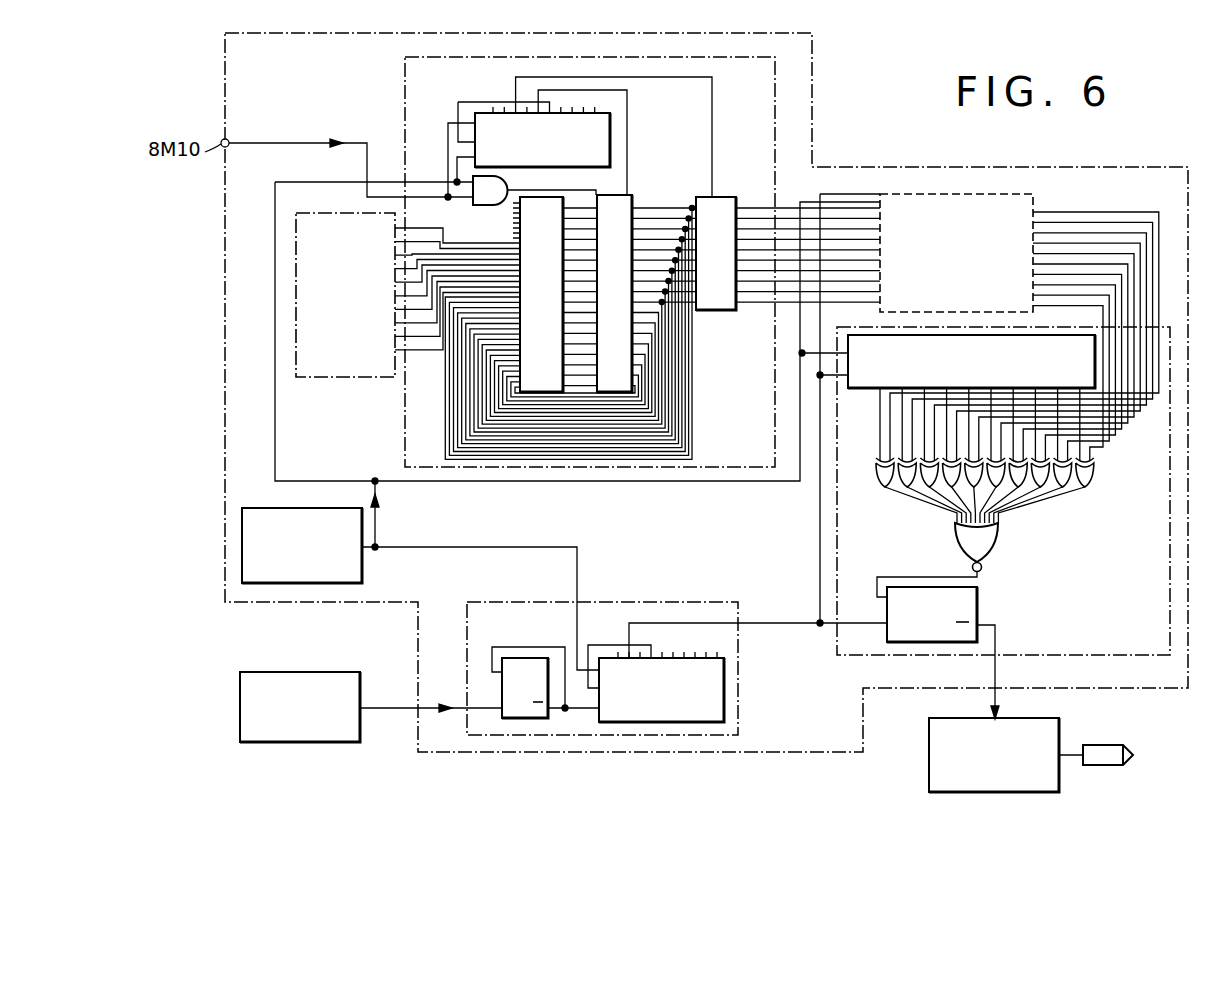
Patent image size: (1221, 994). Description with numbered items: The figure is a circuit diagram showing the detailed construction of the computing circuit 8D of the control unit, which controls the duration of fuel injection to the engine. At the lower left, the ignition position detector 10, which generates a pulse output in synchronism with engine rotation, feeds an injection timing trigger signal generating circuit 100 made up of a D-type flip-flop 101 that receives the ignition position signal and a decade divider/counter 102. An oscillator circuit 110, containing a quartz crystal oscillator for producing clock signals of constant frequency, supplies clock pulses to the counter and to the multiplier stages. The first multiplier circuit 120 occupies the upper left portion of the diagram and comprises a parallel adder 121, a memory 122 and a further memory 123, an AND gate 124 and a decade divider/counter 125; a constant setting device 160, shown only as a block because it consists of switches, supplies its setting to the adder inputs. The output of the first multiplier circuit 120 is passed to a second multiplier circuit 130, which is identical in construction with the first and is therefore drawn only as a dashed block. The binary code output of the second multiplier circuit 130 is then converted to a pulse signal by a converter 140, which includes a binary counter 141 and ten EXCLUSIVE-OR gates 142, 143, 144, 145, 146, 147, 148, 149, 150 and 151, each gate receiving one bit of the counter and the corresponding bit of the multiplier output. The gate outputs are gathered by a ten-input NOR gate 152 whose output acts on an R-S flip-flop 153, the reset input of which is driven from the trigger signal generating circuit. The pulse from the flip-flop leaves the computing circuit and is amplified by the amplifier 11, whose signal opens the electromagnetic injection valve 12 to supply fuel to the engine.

The computing circuit 8D is at (868, 167).
The ignition position detector 10 is at (313, 672).
The amplifier 11 is at (1060, 728).
The electromagnetic injection valve 12 is at (1110, 745).
The injection timing trigger signal generating circuit 100 is at (665, 602).
The D-type flip-flop 101 is at (530, 658).
The decade divider/counter 102 is at (677, 658).
The oscillator circuit 110 is at (300, 508).
The first multiplier circuit 120 is at (775, 95).
The parallel adder 121 is at (567, 200).
The memory 122 is at (632, 203).
The memory 123 is at (714, 197).
The AND gate 124 is at (487, 205).
The decade divider/counter 125 is at (612, 125).
The second multiplier circuit 130 is at (1005, 194).
The converter 140 is at (872, 327).
The binary counter 141 is at (878, 389).
The EXCLUSIVE-OR gate 142 is at (880, 470).
The EXCLUSIVE-OR gate 143 is at (907, 490).
The EXCLUSIVE-OR gate 144 is at (929, 490).
The EXCLUSIVE-OR gate 145 is at (951, 490).
The EXCLUSIVE-OR gate 146 is at (974, 490).
The EXCLUSIVE-OR gate 147 is at (996, 490).
The EXCLUSIVE-OR gate 148 is at (1018, 490).
The EXCLUSIVE-OR gate 149 is at (1040, 490).
The EXCLUSIVE-OR gate 150 is at (1063, 490).
The EXCLUSIVE-OR gate 151 is at (1086, 478).
The 10-input NOR gate 152 is at (981, 569).
The R-S flip-flop 153 is at (977, 600).
The constant setting device 160 is at (350, 213).